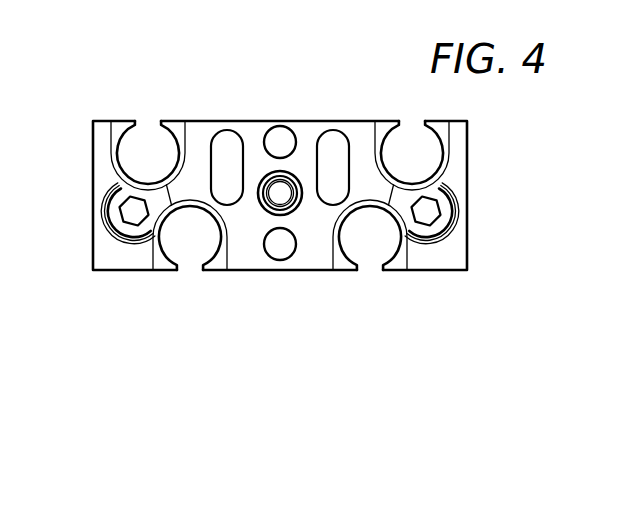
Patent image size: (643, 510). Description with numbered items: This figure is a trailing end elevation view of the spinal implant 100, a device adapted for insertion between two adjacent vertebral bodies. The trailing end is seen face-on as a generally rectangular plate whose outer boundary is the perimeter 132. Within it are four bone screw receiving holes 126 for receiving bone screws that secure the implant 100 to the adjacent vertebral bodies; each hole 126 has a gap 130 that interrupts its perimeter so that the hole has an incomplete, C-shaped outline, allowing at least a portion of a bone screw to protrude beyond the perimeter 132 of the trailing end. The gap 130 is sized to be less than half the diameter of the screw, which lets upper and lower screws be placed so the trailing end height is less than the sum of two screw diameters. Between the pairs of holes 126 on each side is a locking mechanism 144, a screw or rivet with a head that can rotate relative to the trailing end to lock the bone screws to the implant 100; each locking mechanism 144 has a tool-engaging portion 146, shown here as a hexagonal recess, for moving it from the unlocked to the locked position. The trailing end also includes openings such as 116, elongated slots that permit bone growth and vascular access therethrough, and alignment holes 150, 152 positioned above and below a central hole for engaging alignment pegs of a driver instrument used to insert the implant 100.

The spinal implant 100 is at (510, 288).
The opening 116 is at (228, 145).
The bone screw receiving hole 126 is at (191, 247).
The gap 130 is at (149, 143).
The perimeter of trailing end 132 is at (323, 272).
The locking mechanism 144 is at (437, 228).
The tool-engaging portion 146 is at (428, 210).
The alignment hole 150 is at (280, 144).
The alignment hole 152 is at (280, 246).